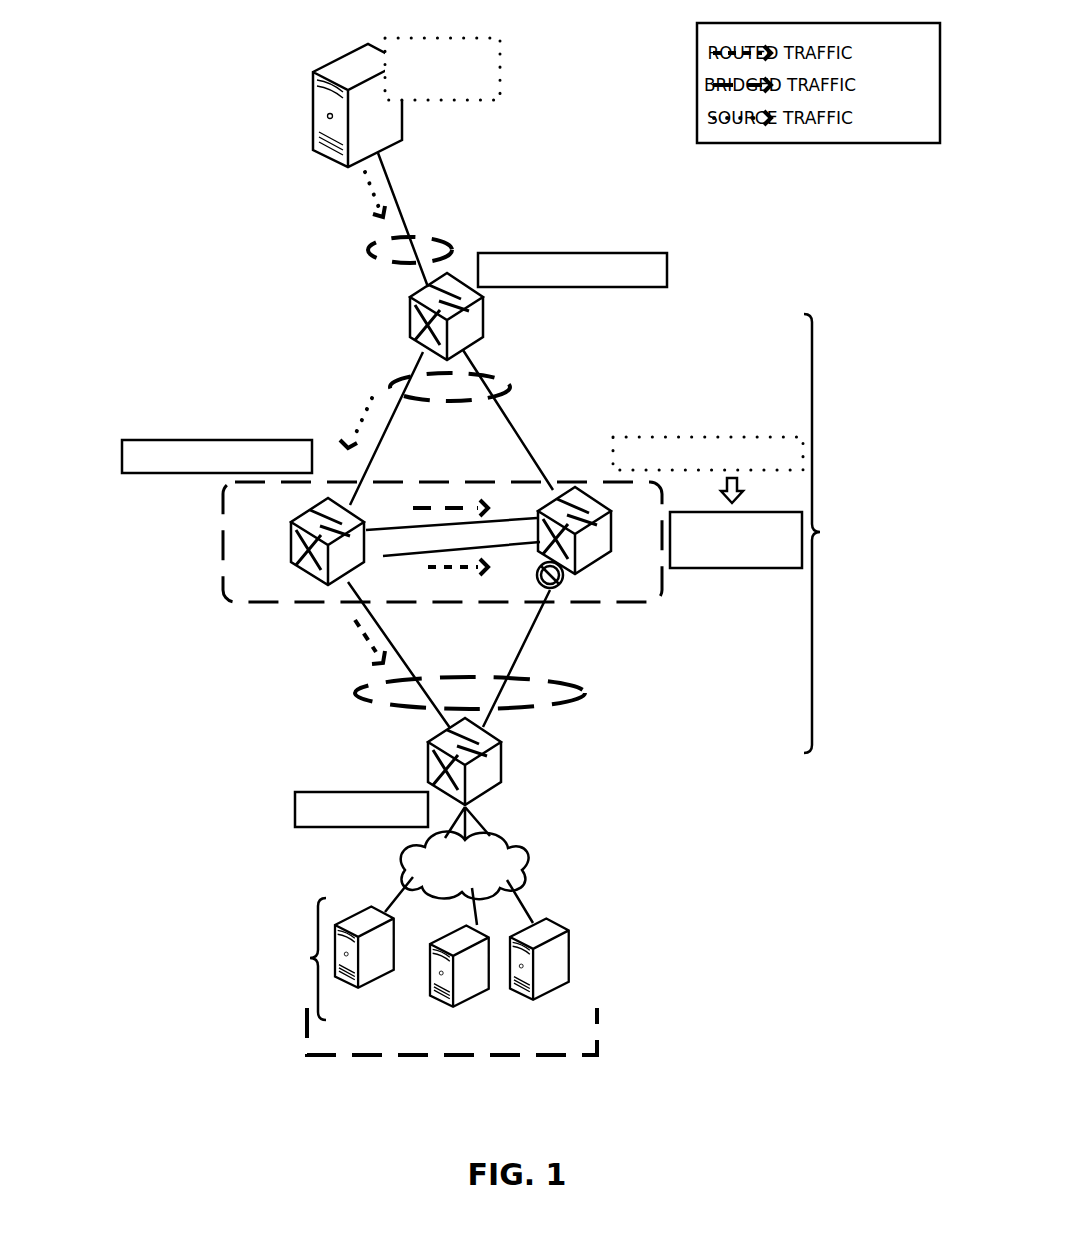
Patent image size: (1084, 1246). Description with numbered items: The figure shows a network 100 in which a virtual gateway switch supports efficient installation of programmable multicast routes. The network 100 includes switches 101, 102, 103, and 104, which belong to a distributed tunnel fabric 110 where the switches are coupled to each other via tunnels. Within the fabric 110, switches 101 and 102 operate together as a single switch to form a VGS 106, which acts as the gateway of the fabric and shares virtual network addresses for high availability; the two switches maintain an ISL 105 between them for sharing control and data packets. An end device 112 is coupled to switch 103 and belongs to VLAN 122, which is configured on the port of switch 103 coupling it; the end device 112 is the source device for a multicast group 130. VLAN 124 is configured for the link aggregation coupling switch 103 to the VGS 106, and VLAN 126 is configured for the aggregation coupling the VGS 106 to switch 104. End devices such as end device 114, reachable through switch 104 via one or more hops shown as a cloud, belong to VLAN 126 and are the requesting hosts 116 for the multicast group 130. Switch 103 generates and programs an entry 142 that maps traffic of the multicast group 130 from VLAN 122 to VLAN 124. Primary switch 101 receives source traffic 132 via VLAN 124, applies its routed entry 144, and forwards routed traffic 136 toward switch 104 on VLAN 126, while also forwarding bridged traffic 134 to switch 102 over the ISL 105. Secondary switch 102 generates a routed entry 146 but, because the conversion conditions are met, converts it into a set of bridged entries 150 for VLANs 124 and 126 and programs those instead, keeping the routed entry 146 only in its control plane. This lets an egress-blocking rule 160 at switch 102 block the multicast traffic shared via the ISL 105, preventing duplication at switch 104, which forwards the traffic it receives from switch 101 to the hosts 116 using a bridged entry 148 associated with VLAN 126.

The network 100 is at (147, 88).
The switch 101 is at (288, 533).
The switch 102 is at (613, 538).
The switch 103 is at (483, 300).
The switch 104 is at (502, 772).
The ISL 105 is at (530, 540).
The VGS 106 is at (612, 605).
The distributed tunnel fabric 110 is at (882, 533).
The end device 112 is at (286, 130).
The end device 114 is at (572, 957).
The hosts 116 is at (365, 959).
The VLAN 122 is at (382, 243).
The VLAN 124 is at (397, 387).
The VLAN 126 is at (360, 688).
The multicast group 130 is at (442, 69).
The source traffic 132 is at (367, 190).
The bridged traffic 134 is at (450, 503).
The routed traffic 136 is at (363, 635).
The entry 142 is at (572, 253).
The routed entry 144 is at (215, 440).
The routed entry 146 is at (708, 437).
The bridged entry 148 is at (295, 818).
The bridged entries 150 is at (742, 568).
The egress-blocking rule 160 is at (553, 590).